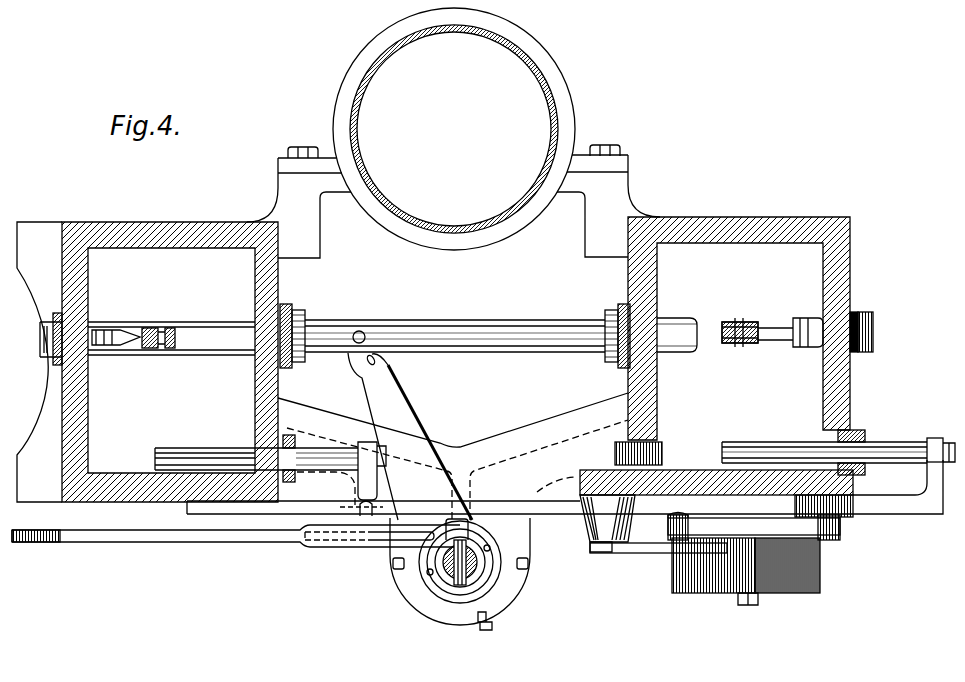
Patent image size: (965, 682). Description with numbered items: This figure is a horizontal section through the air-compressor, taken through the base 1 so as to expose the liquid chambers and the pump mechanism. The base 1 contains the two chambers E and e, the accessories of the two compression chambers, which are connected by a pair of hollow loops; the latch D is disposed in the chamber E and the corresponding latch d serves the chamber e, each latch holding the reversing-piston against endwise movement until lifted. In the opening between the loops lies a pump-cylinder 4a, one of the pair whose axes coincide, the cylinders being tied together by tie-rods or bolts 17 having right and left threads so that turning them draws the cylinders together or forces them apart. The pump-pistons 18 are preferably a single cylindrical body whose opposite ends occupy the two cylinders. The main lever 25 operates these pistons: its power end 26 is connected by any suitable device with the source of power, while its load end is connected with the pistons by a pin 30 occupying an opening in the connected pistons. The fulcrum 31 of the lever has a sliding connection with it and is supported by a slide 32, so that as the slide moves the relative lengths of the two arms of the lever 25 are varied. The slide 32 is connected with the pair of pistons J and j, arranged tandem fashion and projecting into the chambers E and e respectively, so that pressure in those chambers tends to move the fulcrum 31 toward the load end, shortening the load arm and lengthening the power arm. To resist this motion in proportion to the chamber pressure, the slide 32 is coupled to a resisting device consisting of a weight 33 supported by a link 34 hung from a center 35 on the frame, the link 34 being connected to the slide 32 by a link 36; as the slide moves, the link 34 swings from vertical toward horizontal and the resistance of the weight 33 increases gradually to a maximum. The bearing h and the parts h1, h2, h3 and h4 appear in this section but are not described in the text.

The base 1 is at (75, 408).
The bearing bushing h is at (454, 129).
The shaft h1 is at (472, 322).
The pin h2 is at (363, 330).
The rod h3 is at (432, 427).
The arm h4 is at (392, 365).
The latch d is at (128, 330).
The chamber e is at (162, 317).
The chamber E is at (748, 275).
The latch D is at (775, 326).
The piston j is at (205, 448).
The piston J is at (772, 450).
The main lever 25 is at (193, 542).
The power end 26 is at (27, 542).
The fulcrum 31 is at (370, 545).
The slide 32 is at (498, 503).
The tie-rods or bolts 17 is at (428, 575).
The pump-pistons 18 is at (475, 575).
The pin 30 is at (462, 585).
The pump-cylinder 4a is at (455, 590).
The weight 33 is at (746, 571).
The link 34 is at (656, 553).
The center 35 is at (603, 550).
The link 36 is at (754, 527).